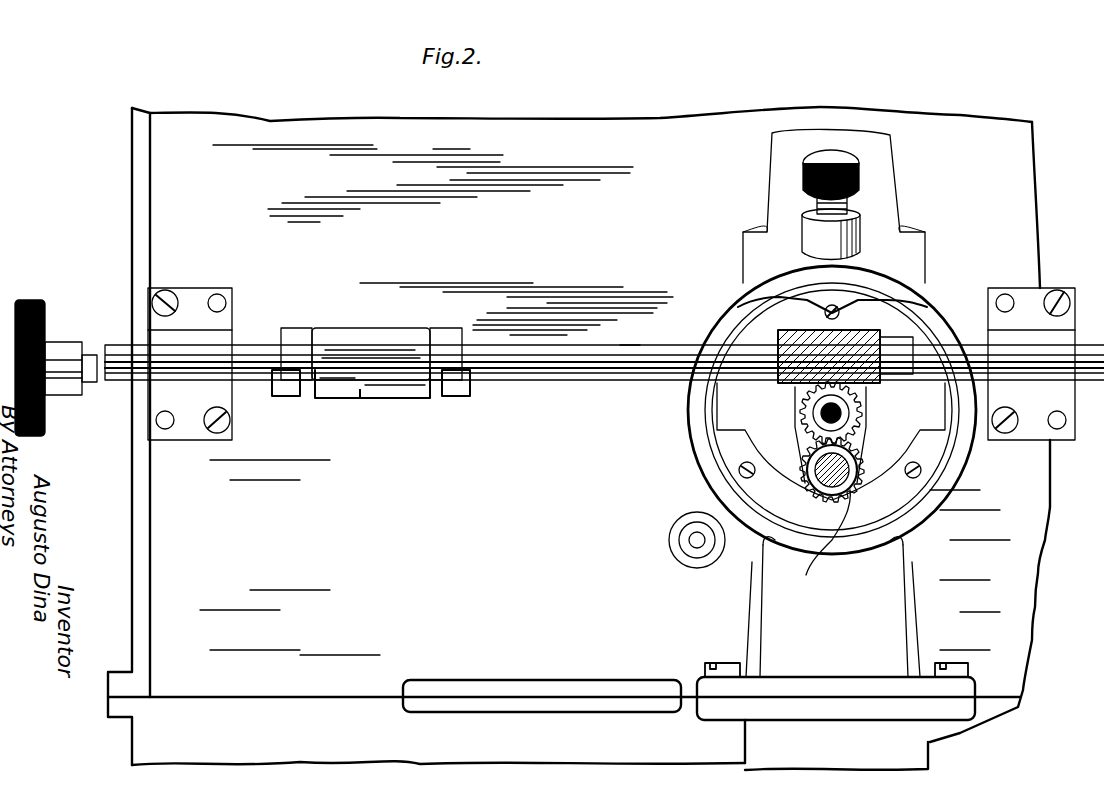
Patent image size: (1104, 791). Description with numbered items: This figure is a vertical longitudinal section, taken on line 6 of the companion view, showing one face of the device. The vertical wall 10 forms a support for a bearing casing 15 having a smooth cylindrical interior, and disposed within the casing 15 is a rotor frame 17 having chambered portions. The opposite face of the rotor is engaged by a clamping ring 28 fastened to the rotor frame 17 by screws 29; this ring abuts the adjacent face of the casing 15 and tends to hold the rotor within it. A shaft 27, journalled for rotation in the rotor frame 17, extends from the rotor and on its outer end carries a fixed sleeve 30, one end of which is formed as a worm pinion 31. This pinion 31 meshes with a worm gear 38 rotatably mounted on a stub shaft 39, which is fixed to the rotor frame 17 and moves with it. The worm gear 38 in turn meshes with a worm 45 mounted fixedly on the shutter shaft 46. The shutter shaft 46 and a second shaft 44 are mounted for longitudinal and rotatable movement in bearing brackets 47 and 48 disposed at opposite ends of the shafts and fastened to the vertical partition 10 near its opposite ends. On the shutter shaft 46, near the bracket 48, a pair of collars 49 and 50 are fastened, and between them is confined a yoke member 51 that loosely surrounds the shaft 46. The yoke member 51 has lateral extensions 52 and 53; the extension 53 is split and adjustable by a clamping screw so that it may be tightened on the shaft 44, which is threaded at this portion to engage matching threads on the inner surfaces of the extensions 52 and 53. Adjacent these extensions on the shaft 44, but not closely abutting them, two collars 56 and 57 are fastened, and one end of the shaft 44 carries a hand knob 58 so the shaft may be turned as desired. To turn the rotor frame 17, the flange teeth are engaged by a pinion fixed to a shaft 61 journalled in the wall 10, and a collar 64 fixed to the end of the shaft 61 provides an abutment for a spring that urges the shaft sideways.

The section line 6- 6 is at (832, 60).
The wall 10 is at (530, 257).
The bearing casing 15 is at (735, 318).
The rotor frame 17 is at (717, 410).
The shaft 27 is at (814, 464).
The clamping ring 28 is at (824, 486).
The screws 29 is at (741, 467).
The sleeve 30 is at (827, 540).
The pinion 31 is at (856, 464).
The worm gear 38 is at (860, 412).
The stub shaft 39 is at (818, 412).
The shaft 44 is at (548, 382).
The worm 45 is at (868, 325).
The shutter shaft 46 is at (632, 330).
The bearing bracket 47 is at (1031, 364).
The bearing bracket 48 is at (190, 364).
The collar 49 is at (448, 334).
The collar 50 is at (297, 326).
The yoke member 51 is at (365, 320).
The lateral extension 52 is at (398, 398).
The lateral extension 53 is at (338, 398).
The collar 56 is at (455, 398).
The collar 57 is at (284, 398).
The hand knob 58 is at (40, 308).
The shaft 61 is at (690, 540).
The collar 64 is at (686, 520).